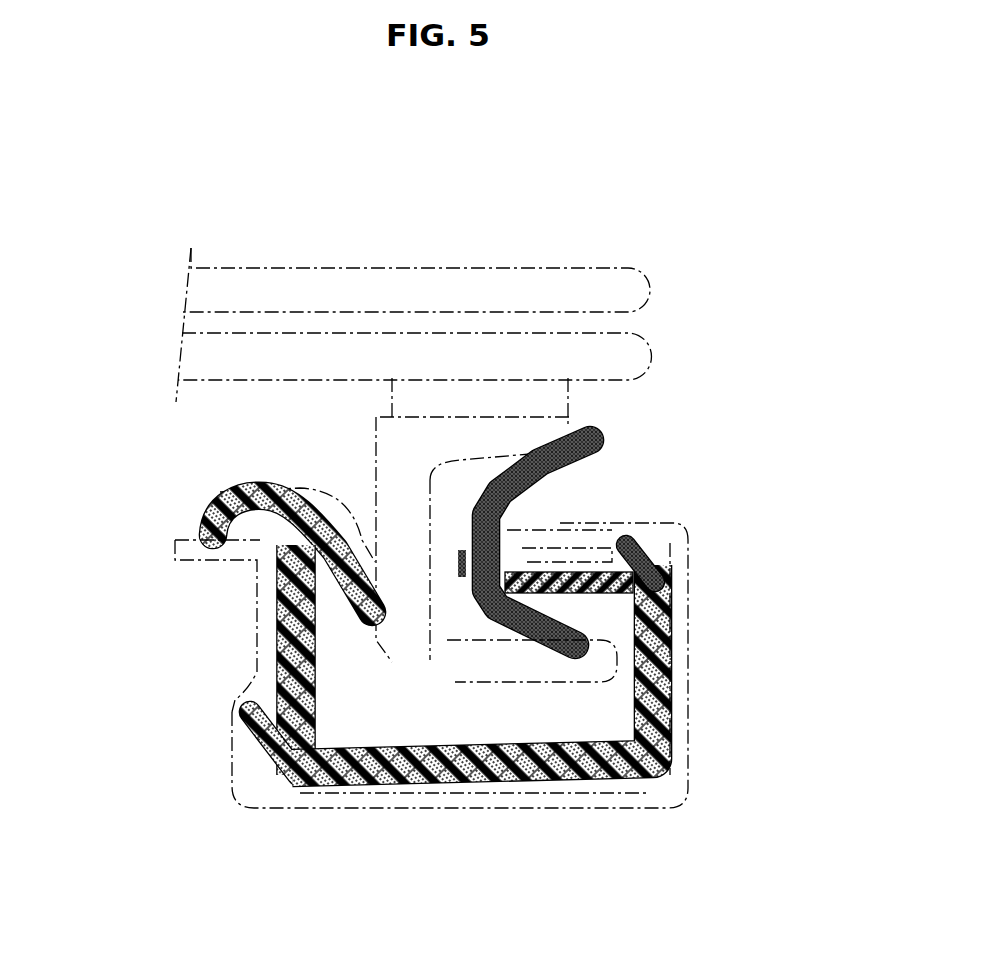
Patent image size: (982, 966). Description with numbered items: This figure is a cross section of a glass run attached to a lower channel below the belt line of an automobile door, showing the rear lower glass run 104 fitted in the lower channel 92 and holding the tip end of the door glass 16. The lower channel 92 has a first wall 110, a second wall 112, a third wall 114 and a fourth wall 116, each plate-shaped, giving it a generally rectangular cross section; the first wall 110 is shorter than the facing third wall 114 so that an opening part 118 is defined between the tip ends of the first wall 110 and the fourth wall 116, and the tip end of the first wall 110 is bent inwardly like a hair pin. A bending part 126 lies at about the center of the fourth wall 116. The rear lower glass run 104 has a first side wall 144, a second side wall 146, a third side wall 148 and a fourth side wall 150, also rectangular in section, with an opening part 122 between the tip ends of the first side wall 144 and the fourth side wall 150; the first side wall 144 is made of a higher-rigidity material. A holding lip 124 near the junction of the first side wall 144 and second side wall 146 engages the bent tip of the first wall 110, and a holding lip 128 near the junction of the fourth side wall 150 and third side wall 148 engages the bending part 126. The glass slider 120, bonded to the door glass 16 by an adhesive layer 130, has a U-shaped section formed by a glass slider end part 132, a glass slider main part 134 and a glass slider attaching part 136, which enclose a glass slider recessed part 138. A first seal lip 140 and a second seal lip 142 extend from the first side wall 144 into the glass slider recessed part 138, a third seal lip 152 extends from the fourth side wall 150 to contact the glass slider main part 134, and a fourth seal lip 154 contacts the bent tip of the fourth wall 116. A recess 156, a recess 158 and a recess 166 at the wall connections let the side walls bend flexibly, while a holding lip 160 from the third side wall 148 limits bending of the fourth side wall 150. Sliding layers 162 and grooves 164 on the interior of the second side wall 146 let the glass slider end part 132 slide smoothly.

The door glass 16 is at (425, 268).
The lower channel 92 is at (268, 815).
The rear lower glass run 104 is at (650, 788).
The first wall 110 is at (566, 527).
The second wall 112 is at (680, 650).
The third wall 114 is at (513, 812).
The fourth wall 116 is at (243, 623).
The opening part 118 is at (220, 492).
The glass slider 120 is at (373, 440).
The opening part 122 is at (448, 578).
The holding lip 124 is at (577, 568).
The bending part 126 is at (232, 698).
The holding lip 128 is at (252, 720).
The adhesive layer 130 is at (570, 400).
The glass slider end part 132 is at (668, 690).
The glass slider main part 134 is at (400, 478).
The glass slider attaching part 136 is at (523, 433).
The glass slider recessed part 138 is at (370, 483).
The first seal lip 140 is at (580, 467).
The second seal lip 142 is at (605, 598).
The first side wall 144 is at (600, 523).
The second side wall 146 is at (603, 660).
The third side wall 148 is at (478, 762).
The fourth side wall 150 is at (293, 637).
The third seal lip 152 is at (360, 573).
The fourth seal lip 154 is at (213, 520).
The recess 156 is at (655, 722).
The recess 158 is at (340, 765).
The holding lip 160 is at (375, 752).
The sliding layers 162 is at (625, 735).
The grooves 164 is at (645, 705).
The recess 166 is at (597, 607).